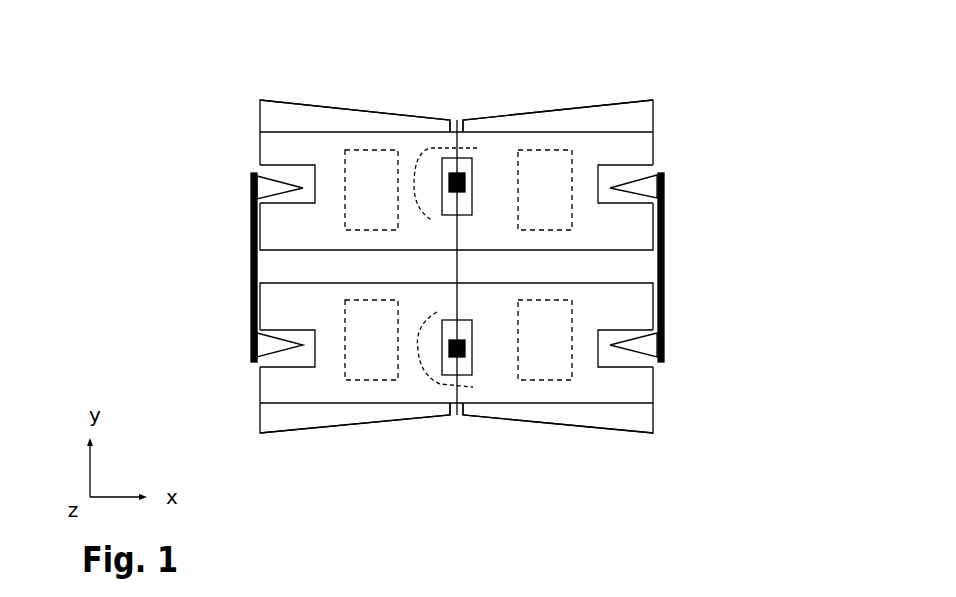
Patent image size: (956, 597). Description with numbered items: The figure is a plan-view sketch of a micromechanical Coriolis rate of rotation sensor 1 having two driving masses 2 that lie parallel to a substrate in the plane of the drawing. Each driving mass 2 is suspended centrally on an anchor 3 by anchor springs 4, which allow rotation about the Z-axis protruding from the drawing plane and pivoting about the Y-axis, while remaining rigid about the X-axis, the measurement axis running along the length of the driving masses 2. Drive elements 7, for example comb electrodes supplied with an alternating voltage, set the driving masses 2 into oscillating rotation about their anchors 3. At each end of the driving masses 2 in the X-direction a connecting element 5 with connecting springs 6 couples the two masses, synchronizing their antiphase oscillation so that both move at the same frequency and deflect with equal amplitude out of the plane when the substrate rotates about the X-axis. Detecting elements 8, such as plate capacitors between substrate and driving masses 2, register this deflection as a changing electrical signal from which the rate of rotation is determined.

The micromechanical Coriolis rate of rotation sensor 1 is at (690, 109).
The driving mass 2 is at (275, 153).
The anchor 3 is at (449, 178).
The anchor spring 4 is at (463, 207).
The connecting element 5 is at (250, 258).
The connecting spring 6 is at (295, 185).
The drive element 7 is at (322, 117).
The detecting element 8 is at (380, 168).